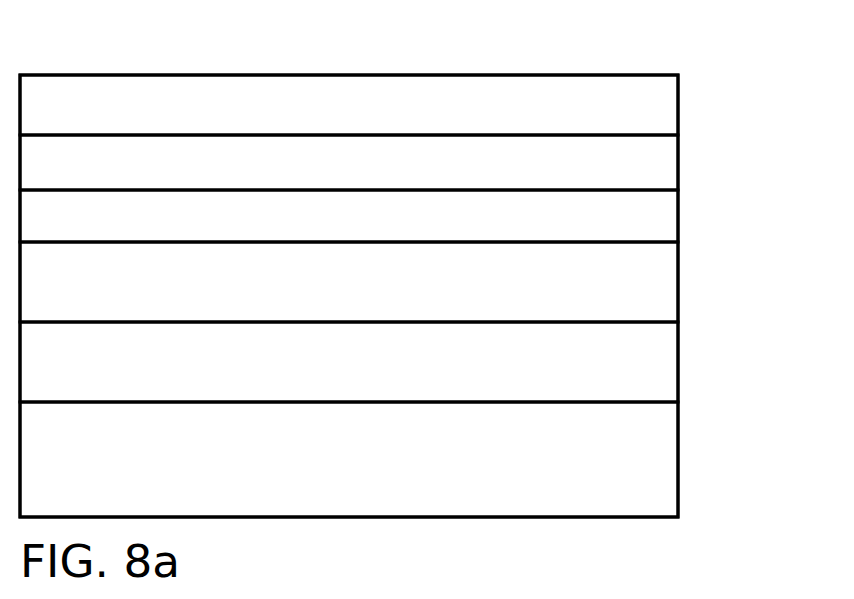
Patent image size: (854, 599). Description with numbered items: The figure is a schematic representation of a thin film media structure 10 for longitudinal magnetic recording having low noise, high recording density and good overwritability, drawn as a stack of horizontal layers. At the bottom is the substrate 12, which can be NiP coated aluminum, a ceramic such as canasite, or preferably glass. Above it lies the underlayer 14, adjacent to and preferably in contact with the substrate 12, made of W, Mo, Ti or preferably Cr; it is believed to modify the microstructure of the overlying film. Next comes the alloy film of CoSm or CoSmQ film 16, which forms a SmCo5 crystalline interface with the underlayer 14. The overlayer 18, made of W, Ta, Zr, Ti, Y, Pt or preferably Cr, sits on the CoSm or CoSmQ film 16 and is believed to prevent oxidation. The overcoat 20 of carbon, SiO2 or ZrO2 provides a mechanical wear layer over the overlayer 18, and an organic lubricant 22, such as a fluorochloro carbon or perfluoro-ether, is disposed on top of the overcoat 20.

The thin film media structure 10 is at (203, 72).
The substrate 12 is at (660, 440).
The underlayer 14 is at (666, 348).
The CoSm or CoSmQ film 16 is at (663, 278).
The overlayer 18 is at (657, 225).
The overcoat 20 is at (663, 168).
The organic lubricant 22 is at (663, 117).